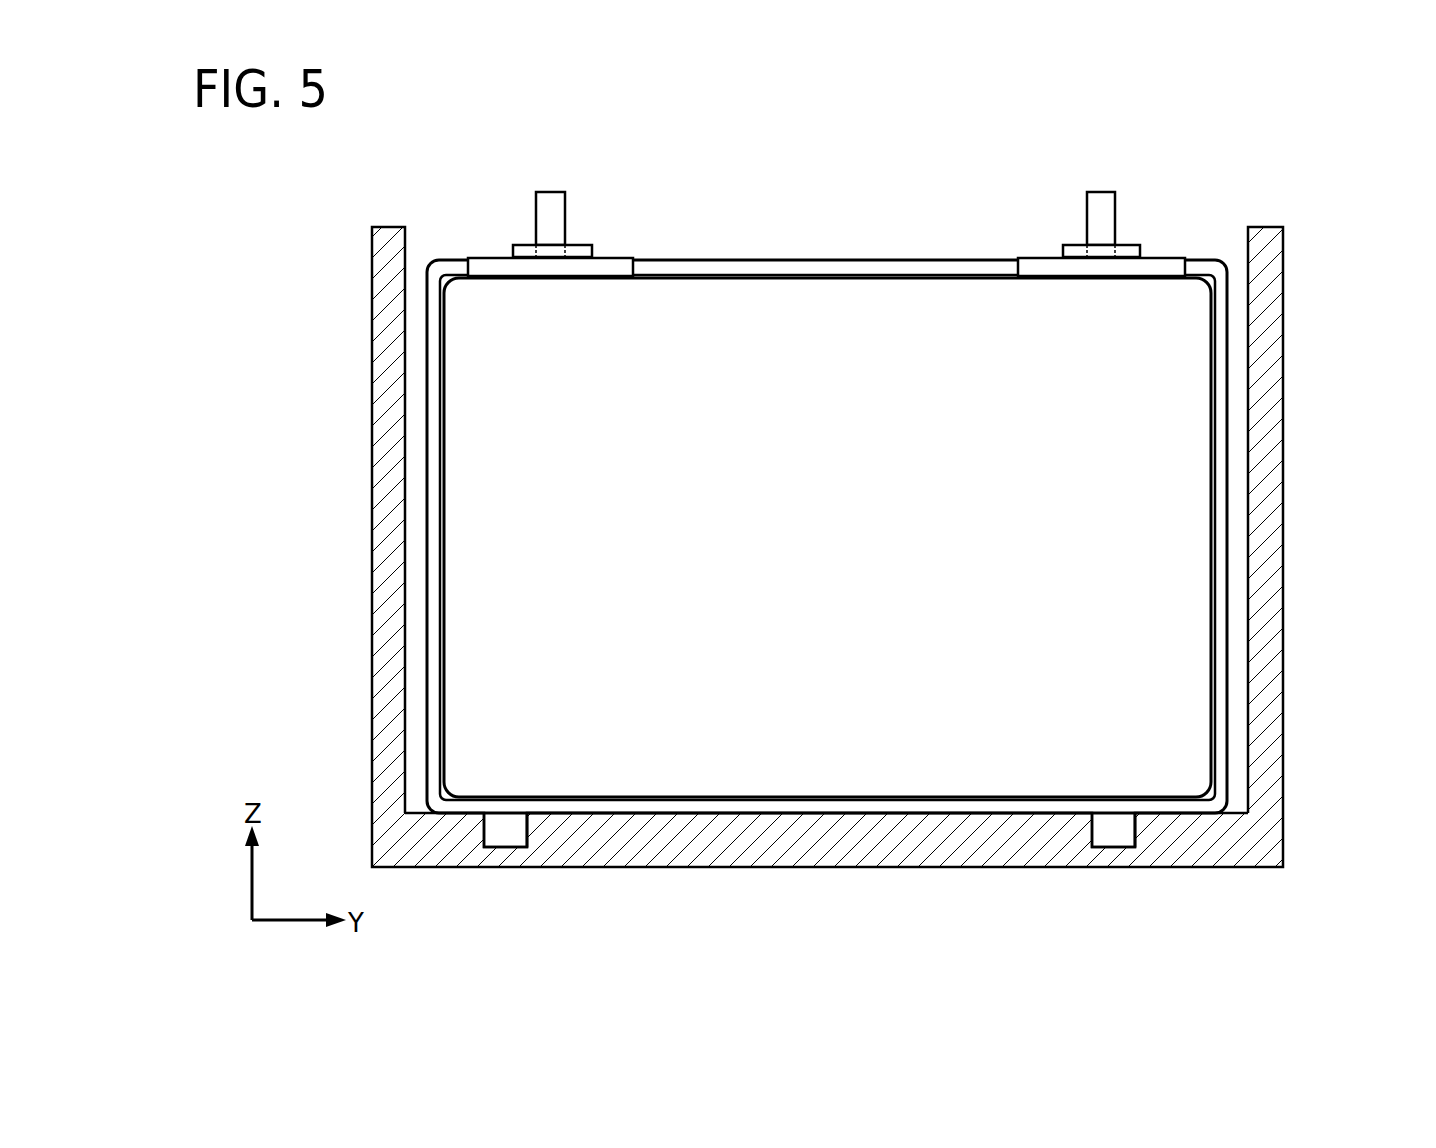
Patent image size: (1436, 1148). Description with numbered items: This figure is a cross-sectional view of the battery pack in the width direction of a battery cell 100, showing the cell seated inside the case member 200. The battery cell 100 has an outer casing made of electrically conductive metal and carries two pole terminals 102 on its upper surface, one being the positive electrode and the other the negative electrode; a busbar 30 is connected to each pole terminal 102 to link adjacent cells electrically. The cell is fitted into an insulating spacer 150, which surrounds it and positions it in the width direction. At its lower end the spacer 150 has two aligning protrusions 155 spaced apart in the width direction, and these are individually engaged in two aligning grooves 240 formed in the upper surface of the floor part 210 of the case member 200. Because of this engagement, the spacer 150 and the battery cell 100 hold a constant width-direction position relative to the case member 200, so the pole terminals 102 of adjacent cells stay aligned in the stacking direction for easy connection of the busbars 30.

The busbar 30 is at (580, 252).
The battery cell 100 is at (800, 553).
The pole terminal 102 is at (548, 200).
The spacer 150 is at (819, 256).
The aligning protrusion 155 is at (519, 836).
The case member 200 is at (1267, 694).
The floor part 210 is at (787, 843).
The aligning groove 240 is at (489, 835).